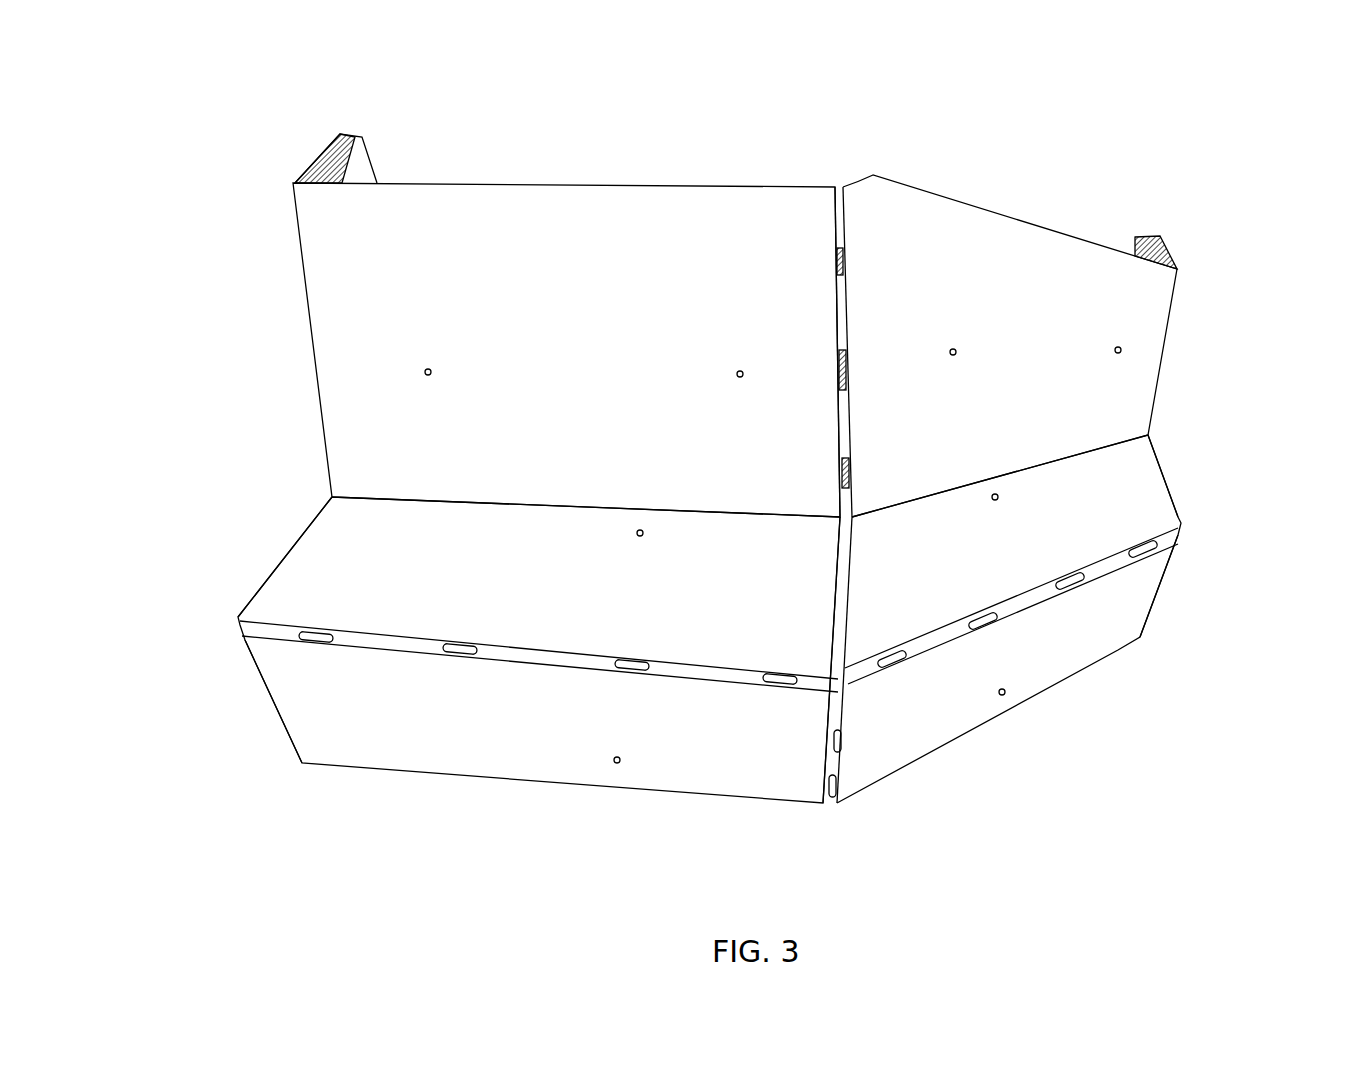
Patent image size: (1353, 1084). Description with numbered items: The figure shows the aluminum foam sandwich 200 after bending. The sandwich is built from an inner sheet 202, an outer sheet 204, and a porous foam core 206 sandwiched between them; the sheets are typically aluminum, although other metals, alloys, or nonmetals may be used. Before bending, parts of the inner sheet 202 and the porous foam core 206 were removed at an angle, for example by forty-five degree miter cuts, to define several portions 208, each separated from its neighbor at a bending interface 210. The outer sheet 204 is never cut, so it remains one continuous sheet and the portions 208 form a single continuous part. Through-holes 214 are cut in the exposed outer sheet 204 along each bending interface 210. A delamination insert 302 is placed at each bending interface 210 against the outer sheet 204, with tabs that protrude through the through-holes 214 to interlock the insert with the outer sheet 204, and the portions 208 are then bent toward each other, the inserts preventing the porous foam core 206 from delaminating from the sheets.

The aluminum foam sandwich 200 is at (230, 76).
The inner sheet 202 is at (362, 163).
The outer sheet 204 is at (342, 326).
The porous foam core 206 is at (1155, 237).
The portions 208 is at (861, 213).
The bending interface 210 is at (847, 410).
The through-holes 214 is at (846, 266).
The delamination insert 302 is at (838, 262).